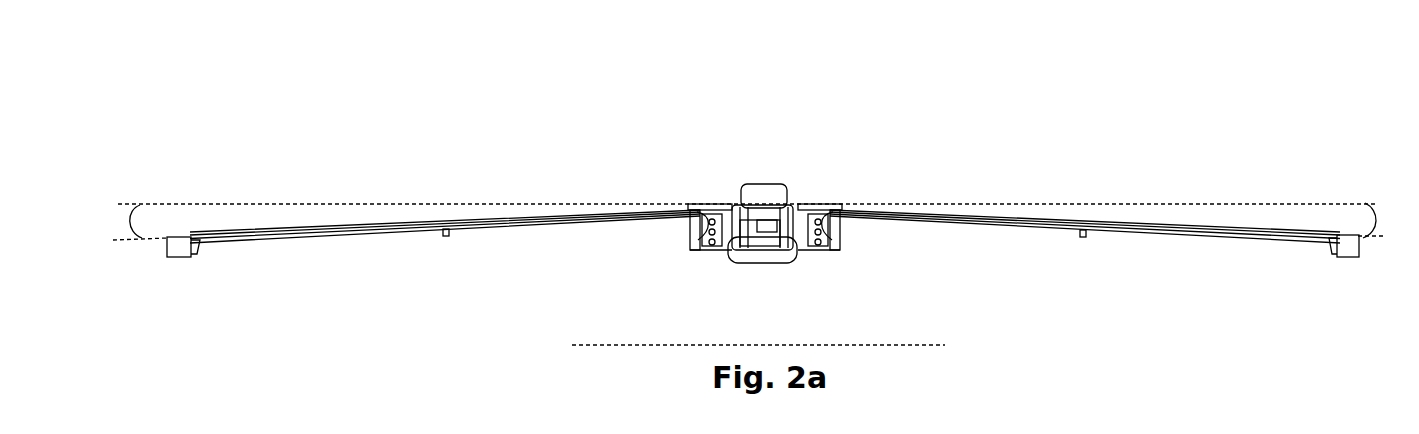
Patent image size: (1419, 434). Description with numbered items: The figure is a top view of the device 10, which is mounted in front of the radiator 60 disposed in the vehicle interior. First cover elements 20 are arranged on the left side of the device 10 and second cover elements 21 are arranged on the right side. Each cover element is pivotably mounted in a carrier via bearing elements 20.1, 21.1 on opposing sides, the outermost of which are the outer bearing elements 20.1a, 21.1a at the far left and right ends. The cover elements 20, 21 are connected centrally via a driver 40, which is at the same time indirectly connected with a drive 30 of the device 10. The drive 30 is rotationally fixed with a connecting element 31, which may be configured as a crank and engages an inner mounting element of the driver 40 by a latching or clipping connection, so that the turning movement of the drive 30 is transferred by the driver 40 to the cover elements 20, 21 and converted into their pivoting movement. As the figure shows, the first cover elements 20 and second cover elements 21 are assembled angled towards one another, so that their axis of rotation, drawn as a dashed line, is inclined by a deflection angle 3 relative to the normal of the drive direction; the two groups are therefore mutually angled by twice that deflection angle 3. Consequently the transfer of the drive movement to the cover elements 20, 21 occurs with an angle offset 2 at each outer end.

The angle offset 2 is at (122, 204).
The deflection angle 3 is at (326, 203).
The device 10 is at (914, 142).
The first cover elements 20 is at (399, 225).
The bearing elements of the first cover elements 20.1 is at (180, 257).
The outer bearing element 20.1a is at (219, 301).
The second cover elements 21 is at (1100, 225).
The bearing elements of the second cover elements 21.1 is at (1347, 257).
The outer bearing element 21.1a is at (1345, 309).
The drive 30 is at (755, 185).
The connecting element 31 is at (804, 207).
The driver 40 is at (763, 263).
The radiator 60 is at (920, 344).